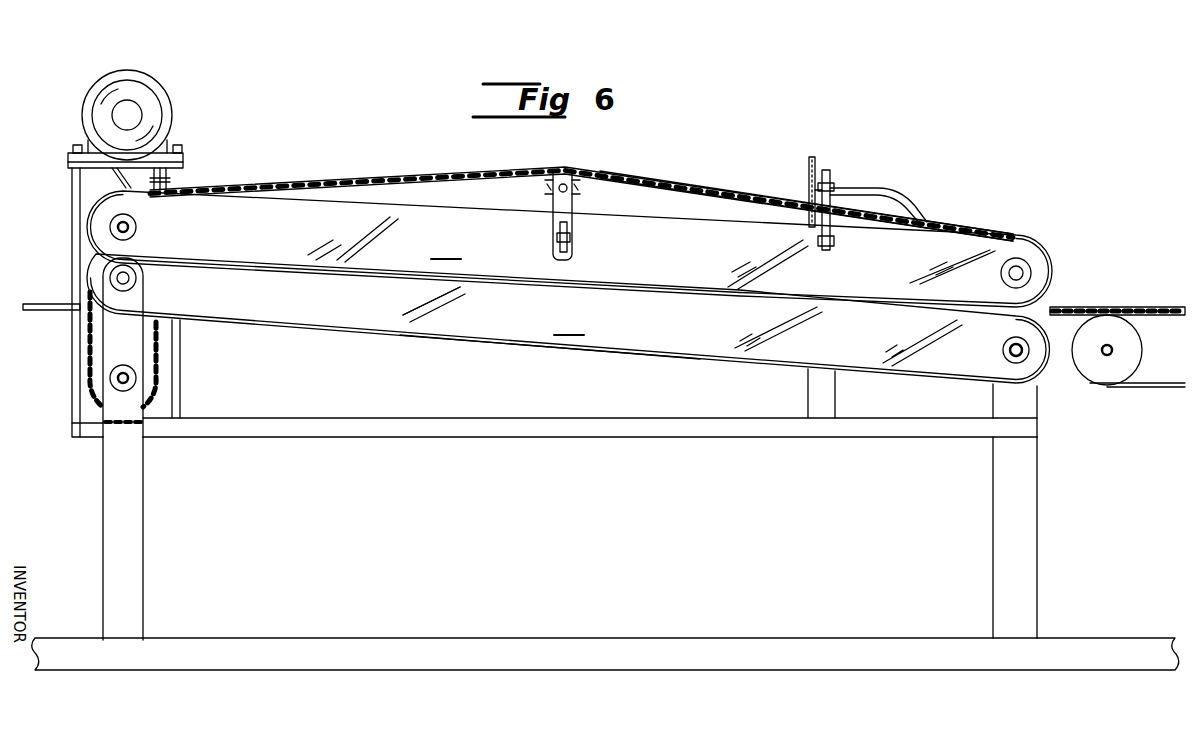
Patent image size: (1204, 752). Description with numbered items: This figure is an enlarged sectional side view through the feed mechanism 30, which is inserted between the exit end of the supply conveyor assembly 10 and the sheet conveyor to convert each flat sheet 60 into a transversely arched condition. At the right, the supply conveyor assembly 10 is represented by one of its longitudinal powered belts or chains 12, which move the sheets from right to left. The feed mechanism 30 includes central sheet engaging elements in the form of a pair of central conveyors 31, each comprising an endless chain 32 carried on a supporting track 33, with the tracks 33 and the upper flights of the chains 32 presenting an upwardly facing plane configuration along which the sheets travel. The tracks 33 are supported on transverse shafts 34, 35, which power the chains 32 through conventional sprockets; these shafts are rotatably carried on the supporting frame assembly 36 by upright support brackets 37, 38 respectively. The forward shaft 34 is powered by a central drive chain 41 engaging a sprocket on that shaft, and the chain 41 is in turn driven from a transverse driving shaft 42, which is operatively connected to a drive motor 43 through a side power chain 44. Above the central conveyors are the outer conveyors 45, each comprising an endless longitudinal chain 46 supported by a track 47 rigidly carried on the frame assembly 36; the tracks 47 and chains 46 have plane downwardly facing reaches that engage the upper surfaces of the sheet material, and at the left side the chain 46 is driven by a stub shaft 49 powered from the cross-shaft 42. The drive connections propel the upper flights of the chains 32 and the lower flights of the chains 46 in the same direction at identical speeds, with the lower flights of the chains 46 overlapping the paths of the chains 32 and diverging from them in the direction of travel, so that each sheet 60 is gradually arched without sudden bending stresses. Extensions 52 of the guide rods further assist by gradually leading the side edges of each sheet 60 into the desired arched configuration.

The supply conveyor assembly 10 is at (1121, 303).
The longitudinal powered belts or chains 12 is at (1137, 383).
The feed mechanism 30 is at (760, 153).
The central conveyors 31 is at (455, 326).
The endless chain 32 is at (548, 348).
The supporting track 33 is at (568, 318).
The forward transverse shaft 34 is at (135, 280).
The transverse shaft 35 is at (1003, 350).
The supporting frame assembly 36 is at (133, 525).
The upright support bracket 37 is at (132, 303).
The upright support bracket 38 is at (1027, 401).
The central drive chain 41 is at (158, 344).
The transverse driving shaft 42 is at (128, 381).
The drive motor 43 is at (142, 84).
The side power chain 44 is at (160, 180).
The outer conveyors 45 is at (651, 202).
The endless longitudinal chains 46 is at (390, 158).
The track 47 is at (569, 249).
The stub shaft 49 is at (134, 228).
The extensions of the guide rods 52 is at (905, 200).
The sheet 60 is at (1077, 307).